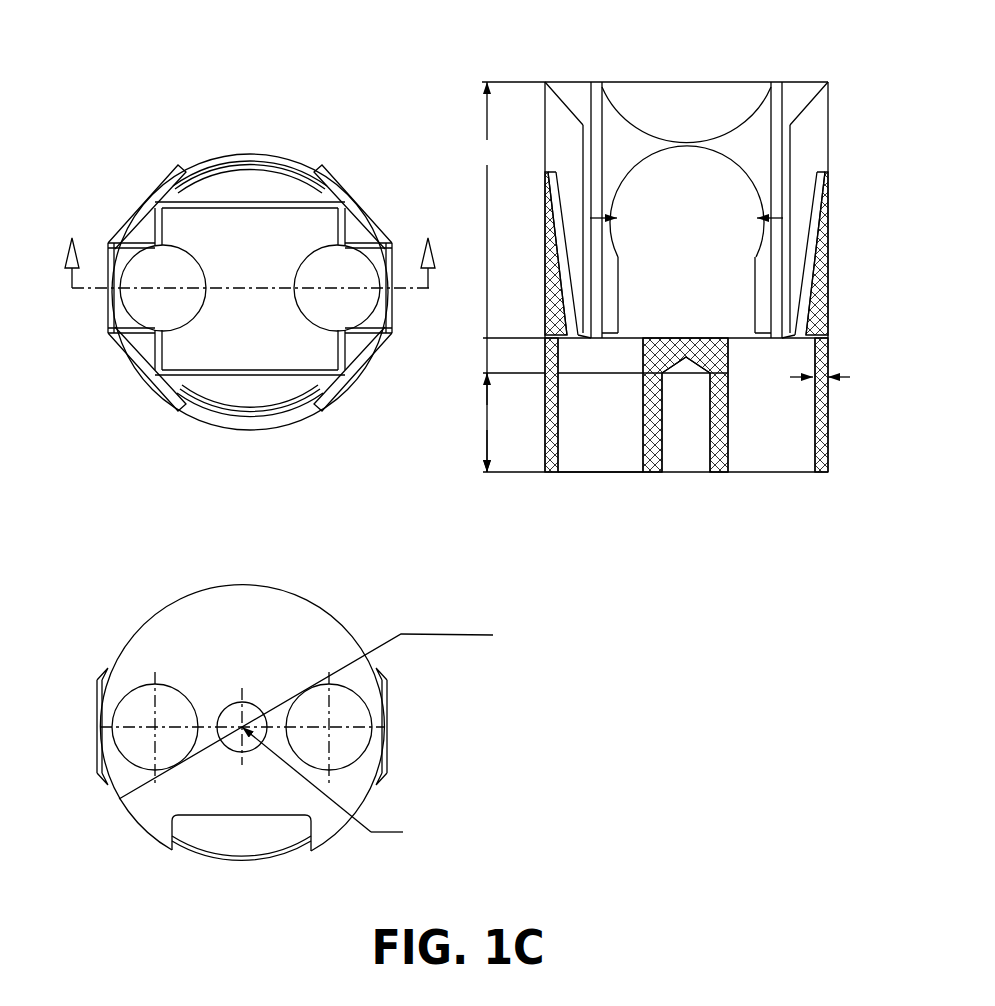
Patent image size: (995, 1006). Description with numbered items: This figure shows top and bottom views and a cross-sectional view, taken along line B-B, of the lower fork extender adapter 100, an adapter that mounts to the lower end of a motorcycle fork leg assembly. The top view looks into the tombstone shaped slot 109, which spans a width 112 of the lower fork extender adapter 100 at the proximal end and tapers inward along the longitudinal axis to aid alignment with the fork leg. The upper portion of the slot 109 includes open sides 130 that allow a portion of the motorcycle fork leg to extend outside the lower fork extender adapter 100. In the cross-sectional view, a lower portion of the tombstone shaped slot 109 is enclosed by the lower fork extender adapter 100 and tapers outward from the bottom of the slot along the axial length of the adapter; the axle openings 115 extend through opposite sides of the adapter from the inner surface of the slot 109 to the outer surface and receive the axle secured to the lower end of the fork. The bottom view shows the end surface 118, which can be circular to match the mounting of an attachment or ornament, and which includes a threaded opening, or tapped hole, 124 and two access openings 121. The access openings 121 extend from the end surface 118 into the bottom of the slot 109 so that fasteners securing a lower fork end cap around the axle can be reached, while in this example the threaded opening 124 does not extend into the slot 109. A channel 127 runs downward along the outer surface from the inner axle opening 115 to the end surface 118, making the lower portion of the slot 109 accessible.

The lower fork extender adapter 100 is at (262, 130).
The tombstone shaped slot 109 is at (226, 248).
The width 112 is at (391, 320).
The axle openings 115 is at (636, 196).
The end surface 118 is at (577, 473).
The access openings 121 is at (146, 310).
The threaded opening (tapped hole) 124 is at (684, 456).
The channel 127 is at (666, 312).
The open sides 130 is at (108, 325).